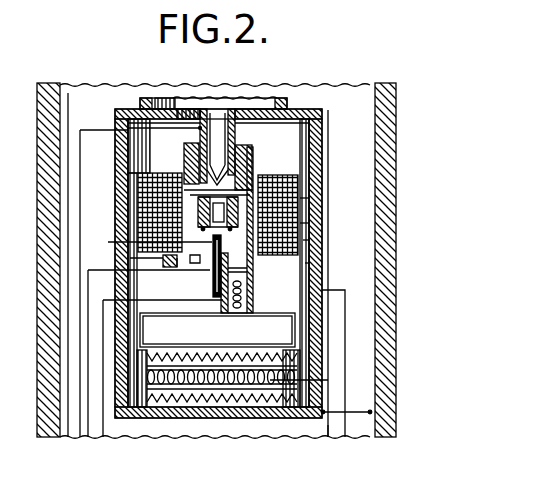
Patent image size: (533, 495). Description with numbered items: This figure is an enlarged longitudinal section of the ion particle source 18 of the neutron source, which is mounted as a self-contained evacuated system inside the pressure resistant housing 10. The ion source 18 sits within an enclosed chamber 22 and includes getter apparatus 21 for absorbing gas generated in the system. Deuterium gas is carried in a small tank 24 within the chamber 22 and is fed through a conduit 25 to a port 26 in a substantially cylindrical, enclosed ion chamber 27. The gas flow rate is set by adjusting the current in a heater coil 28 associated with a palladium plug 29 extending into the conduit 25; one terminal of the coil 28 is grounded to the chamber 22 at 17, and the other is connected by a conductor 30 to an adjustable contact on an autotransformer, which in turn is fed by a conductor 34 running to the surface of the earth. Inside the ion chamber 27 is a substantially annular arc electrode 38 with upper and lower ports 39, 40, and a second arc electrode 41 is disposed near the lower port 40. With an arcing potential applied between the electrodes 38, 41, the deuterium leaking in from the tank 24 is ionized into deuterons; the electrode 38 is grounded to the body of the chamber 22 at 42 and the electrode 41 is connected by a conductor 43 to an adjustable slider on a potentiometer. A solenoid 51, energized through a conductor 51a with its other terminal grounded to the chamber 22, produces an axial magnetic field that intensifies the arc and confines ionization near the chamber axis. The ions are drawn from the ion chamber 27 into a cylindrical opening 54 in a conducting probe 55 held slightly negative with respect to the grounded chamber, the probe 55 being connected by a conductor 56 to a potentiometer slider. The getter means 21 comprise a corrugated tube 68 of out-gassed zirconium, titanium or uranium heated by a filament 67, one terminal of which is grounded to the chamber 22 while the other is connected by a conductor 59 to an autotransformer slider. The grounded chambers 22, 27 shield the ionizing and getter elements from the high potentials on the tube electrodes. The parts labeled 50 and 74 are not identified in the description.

The pressure resistant housing 10 is at (396, 212).
The ground point 17 is at (345, 308).
The ion particle source 18 is at (312, 179).
The getter apparatus 21 is at (306, 358).
The enclosed chamber 22 is at (116, 170).
The tank 24 is at (189, 341).
The conduit 25 is at (253, 277).
The port 26 is at (309, 263).
The ion chamber 27 is at (250, 245).
The heater coil 28 is at (253, 298).
The palladium plug 29 is at (238, 311).
The conductor 30 is at (328, 380).
The conductor 34 is at (68, 184).
The annular arc electrode 38 is at (198, 216).
The upper port 39 is at (309, 198).
The lower port 40 is at (309, 223).
The second arc electrode 41 is at (150, 213).
The ground point 42 is at (127, 276).
The conductor 43 is at (103, 349).
The nozzle block 50 is at (198, 168).
The solenoid 51 is at (309, 240).
The conductor 51a is at (88, 320).
The cylindrical opening 54 is at (238, 168).
The conducting probe 55 is at (237, 147).
The conductor 56 is at (80, 216).
The conductor 59 is at (330, 437).
The filament 67 is at (218, 400).
The corrugated tube 68 is at (177, 398).
The inlet cap 74 is at (222, 104).